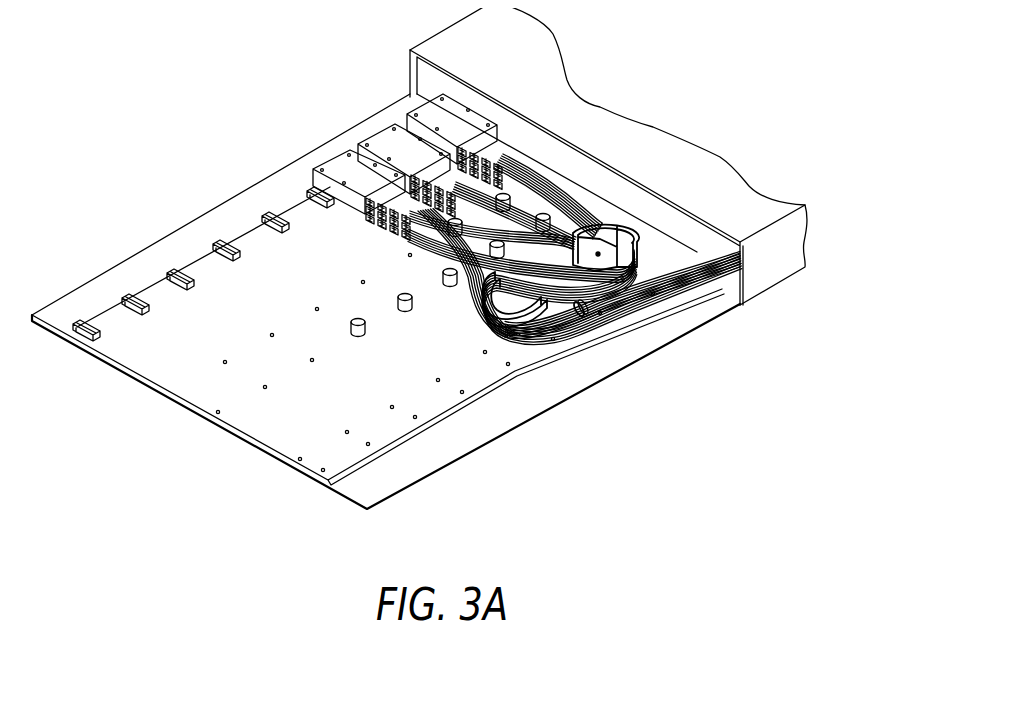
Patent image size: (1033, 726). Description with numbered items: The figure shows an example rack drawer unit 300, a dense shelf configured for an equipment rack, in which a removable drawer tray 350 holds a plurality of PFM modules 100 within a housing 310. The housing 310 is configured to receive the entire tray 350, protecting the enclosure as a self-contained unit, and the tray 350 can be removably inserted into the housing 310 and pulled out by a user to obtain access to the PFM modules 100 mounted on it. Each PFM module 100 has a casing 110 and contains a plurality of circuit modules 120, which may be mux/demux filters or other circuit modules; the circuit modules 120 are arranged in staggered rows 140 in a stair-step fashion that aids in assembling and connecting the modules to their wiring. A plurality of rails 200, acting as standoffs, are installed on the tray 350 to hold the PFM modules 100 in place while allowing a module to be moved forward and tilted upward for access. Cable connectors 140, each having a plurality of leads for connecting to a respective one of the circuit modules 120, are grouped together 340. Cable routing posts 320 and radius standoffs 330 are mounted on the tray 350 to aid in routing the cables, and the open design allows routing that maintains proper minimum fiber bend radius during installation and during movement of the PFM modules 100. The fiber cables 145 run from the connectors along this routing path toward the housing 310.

The PFM module 100 is at (422, 112).
The casing 110 is at (347, 205).
The circuit modules 120 is at (367, 203).
The cable connectors 140 is at (503, 145).
The optical fiber cables 145 is at (562, 188).
The rail 200 is at (235, 243).
The rack drawer unit 300 is at (779, 300).
The housing 310 is at (738, 212).
The cable routing posts 320 is at (445, 282).
The radius standoffs 330 is at (620, 222).
The connector group 340 is at (590, 310).
The removable drawer tray 350 is at (270, 436).